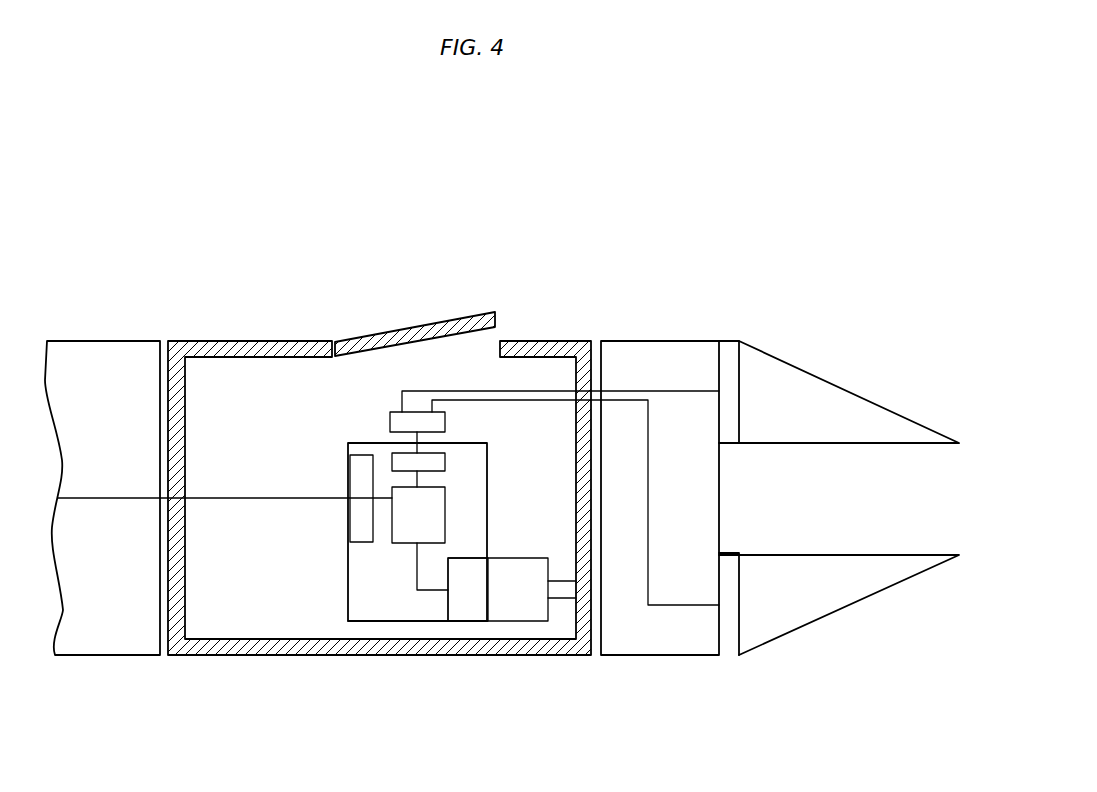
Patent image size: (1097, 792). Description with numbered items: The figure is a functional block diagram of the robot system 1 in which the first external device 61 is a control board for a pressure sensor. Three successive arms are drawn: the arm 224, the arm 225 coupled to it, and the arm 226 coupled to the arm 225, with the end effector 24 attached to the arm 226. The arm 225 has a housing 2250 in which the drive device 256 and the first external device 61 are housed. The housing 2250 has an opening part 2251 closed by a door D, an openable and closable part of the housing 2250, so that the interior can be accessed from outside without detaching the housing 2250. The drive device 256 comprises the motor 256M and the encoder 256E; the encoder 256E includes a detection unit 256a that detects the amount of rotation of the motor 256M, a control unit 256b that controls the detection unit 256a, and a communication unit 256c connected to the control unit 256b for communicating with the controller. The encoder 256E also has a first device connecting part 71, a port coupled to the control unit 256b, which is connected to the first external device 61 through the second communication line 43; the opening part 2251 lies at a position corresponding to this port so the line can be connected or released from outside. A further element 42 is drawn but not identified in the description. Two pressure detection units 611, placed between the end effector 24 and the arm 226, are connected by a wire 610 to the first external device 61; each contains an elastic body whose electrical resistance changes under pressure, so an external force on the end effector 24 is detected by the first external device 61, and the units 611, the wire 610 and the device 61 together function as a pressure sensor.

The robot system 1 is at (762, 190).
The arm 224 is at (110, 336).
The arm 225 is at (379, 446).
The housing 2250 is at (197, 352).
The opening part 2251 is at (498, 350).
The door D is at (402, 330).
The arm 226 is at (649, 336).
The wire 610 is at (531, 376).
The pressure detection unit 611 is at (730, 368).
The end effector 24 is at (836, 413).
The shaft 42 is at (250, 497).
The second communication line 43 is at (416, 447).
The first external device 61 is at (437, 420).
The first device connecting part 71 is at (437, 462).
The drive device 256 is at (413, 584).
The detection unit 256a is at (467, 607).
The control unit 256b is at (405, 532).
The communication unit 256c is at (362, 512).
The encoder 256E is at (378, 622).
The motor 256M is at (522, 621).